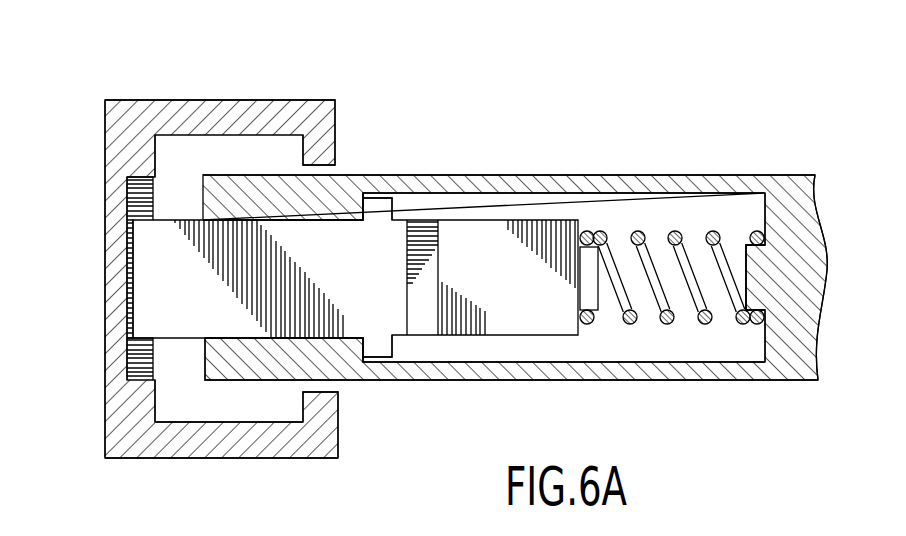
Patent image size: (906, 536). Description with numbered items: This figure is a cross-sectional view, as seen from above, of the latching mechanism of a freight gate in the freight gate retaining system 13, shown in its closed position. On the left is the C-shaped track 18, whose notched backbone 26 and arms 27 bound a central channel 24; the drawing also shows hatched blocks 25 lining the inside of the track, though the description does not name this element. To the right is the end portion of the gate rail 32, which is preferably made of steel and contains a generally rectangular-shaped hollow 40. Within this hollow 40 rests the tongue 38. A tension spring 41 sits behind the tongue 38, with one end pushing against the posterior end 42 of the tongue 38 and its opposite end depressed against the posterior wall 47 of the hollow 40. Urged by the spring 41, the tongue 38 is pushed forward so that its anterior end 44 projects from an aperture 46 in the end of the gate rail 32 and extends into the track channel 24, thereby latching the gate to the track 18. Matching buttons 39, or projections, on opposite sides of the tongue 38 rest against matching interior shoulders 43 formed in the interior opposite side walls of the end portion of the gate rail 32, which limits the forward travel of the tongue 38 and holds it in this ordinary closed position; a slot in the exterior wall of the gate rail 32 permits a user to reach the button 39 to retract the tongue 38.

The freight gate retaining system 13 is at (515, 251).
The C-shaped track 18 is at (194, 272).
The central channel 24 is at (177, 398).
The bushing 25 is at (137, 202).
The notched backbone 26 is at (130, 145).
The arms 27 is at (328, 145).
The gate rail 32 is at (785, 197).
The tongue 38 is at (365, 287).
The buttons 39 is at (385, 203).
The hollow 40 is at (690, 215).
The tension spring 41 is at (637, 232).
The posterior end 42 is at (573, 217).
The interior shoulders 43 is at (357, 193).
The anterior end 44 is at (145, 274).
The aperture 46 is at (203, 218).
The posterior wall 47 is at (755, 295).